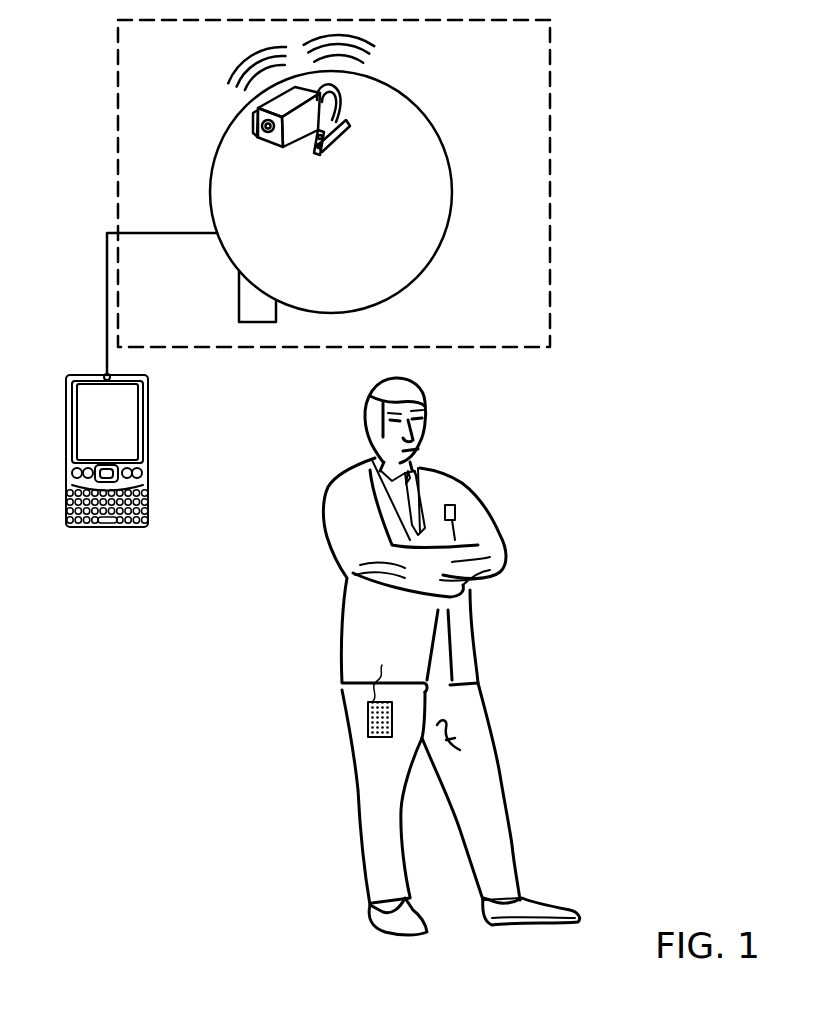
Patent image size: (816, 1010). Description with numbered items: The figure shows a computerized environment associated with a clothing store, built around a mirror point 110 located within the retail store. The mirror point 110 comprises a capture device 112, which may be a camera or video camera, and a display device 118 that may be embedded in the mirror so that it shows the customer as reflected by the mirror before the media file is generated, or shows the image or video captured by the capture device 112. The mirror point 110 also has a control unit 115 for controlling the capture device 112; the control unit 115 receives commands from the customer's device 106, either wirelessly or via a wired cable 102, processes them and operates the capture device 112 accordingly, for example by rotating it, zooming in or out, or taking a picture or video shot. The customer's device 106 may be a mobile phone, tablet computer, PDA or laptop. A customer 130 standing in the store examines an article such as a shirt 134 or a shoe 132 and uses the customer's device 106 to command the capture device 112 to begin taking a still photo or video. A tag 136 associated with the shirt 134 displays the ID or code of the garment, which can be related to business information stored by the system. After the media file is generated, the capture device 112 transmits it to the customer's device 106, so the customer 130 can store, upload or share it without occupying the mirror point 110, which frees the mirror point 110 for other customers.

The wired cable 102 is at (107, 312).
The customer's device 106 is at (150, 405).
The mirror point 110 is at (118, 205).
The capture device 112 is at (255, 124).
The control unit 115 is at (239, 292).
The display device 118 is at (452, 190).
The customer 130 is at (438, 680).
The shoe 132 is at (535, 932).
The shirt 134 is at (478, 643).
The tag 136 is at (365, 712).